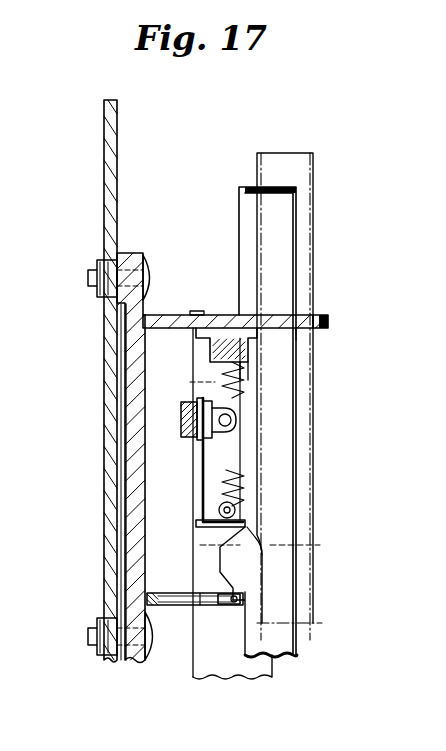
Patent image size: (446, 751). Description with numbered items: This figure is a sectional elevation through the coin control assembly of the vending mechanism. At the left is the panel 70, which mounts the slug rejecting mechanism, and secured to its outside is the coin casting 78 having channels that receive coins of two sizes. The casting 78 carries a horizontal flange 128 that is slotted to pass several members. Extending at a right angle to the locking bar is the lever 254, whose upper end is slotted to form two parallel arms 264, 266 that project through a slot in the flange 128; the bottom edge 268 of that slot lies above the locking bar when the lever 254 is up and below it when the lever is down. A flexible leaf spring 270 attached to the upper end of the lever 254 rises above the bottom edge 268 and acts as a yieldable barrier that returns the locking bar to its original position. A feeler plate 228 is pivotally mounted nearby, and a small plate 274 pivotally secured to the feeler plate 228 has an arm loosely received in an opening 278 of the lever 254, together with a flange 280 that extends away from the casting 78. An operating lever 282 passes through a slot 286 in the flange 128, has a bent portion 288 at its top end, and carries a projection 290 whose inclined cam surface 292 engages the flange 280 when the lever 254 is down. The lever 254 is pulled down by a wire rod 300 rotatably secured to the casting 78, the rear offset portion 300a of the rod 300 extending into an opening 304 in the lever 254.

The panel 70 is at (104, 201).
The coin casting 78 is at (145, 356).
The horizontal flange 128 is at (304, 329).
The feeler plate 228 is at (190, 437).
The lever 254 is at (272, 672).
The arm 264 is at (197, 311).
The arm 266 is at (288, 315).
The bottom edge of slot 268 is at (222, 372).
The flexible leaf spring 270 is at (225, 350).
The small plate 274 is at (203, 492).
The opening 278 is at (236, 425).
The flange 280 is at (222, 514).
The operating lever 282 is at (296, 636).
The slot 286 is at (331, 313).
The bent portion 288 is at (245, 193).
The projection 290 is at (222, 565).
The inclined cam surface 292 is at (250, 528).
The wire rod 300 is at (210, 606).
The offset portion 300a is at (240, 606).
The opening 304 is at (220, 594).